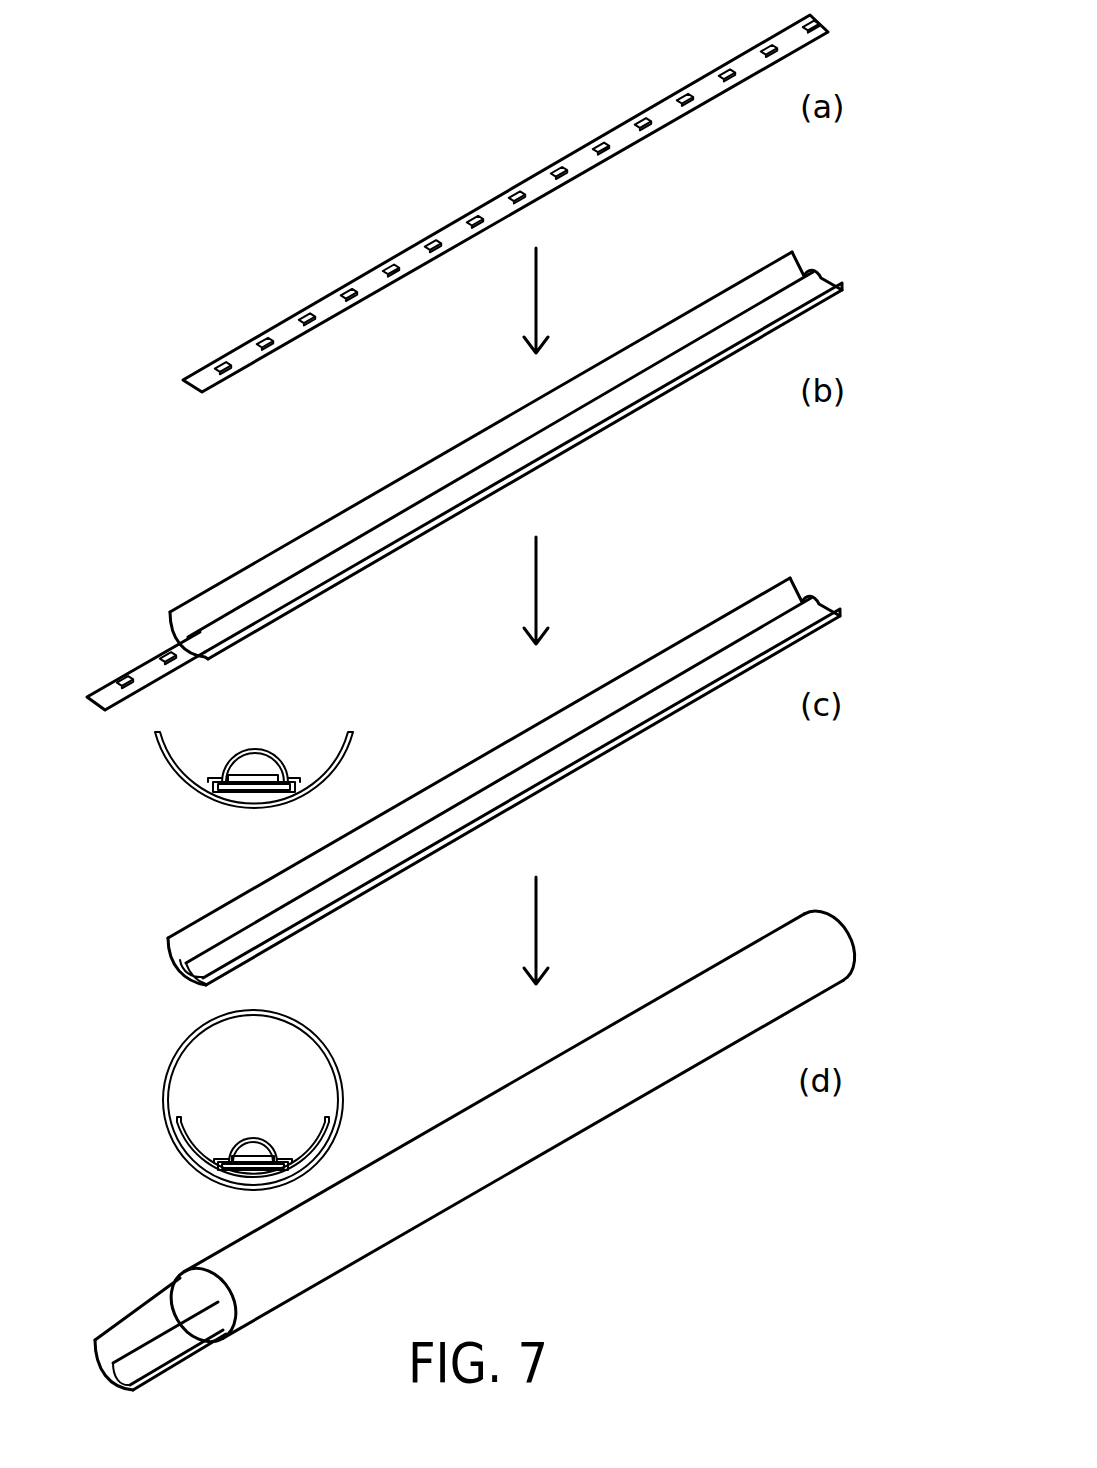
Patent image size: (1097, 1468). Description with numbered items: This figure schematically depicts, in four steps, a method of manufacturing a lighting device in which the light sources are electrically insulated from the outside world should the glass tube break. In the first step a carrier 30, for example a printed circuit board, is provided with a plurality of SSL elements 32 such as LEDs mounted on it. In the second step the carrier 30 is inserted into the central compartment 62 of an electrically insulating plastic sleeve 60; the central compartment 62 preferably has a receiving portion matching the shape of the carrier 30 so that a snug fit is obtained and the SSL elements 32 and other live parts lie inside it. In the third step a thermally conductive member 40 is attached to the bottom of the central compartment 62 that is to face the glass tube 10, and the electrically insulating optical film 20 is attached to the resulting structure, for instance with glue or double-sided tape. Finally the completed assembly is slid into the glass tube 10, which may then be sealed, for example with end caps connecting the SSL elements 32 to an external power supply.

The glass tube 10 is at (650, 1018).
The optical film 20 is at (162, 748).
The carrier 30 is at (202, 375).
The SSL elements 32 is at (350, 290).
The thermally conductive member 40 is at (255, 795).
The plastic sleeve 60 is at (733, 298).
The central compartment 62 is at (477, 478).